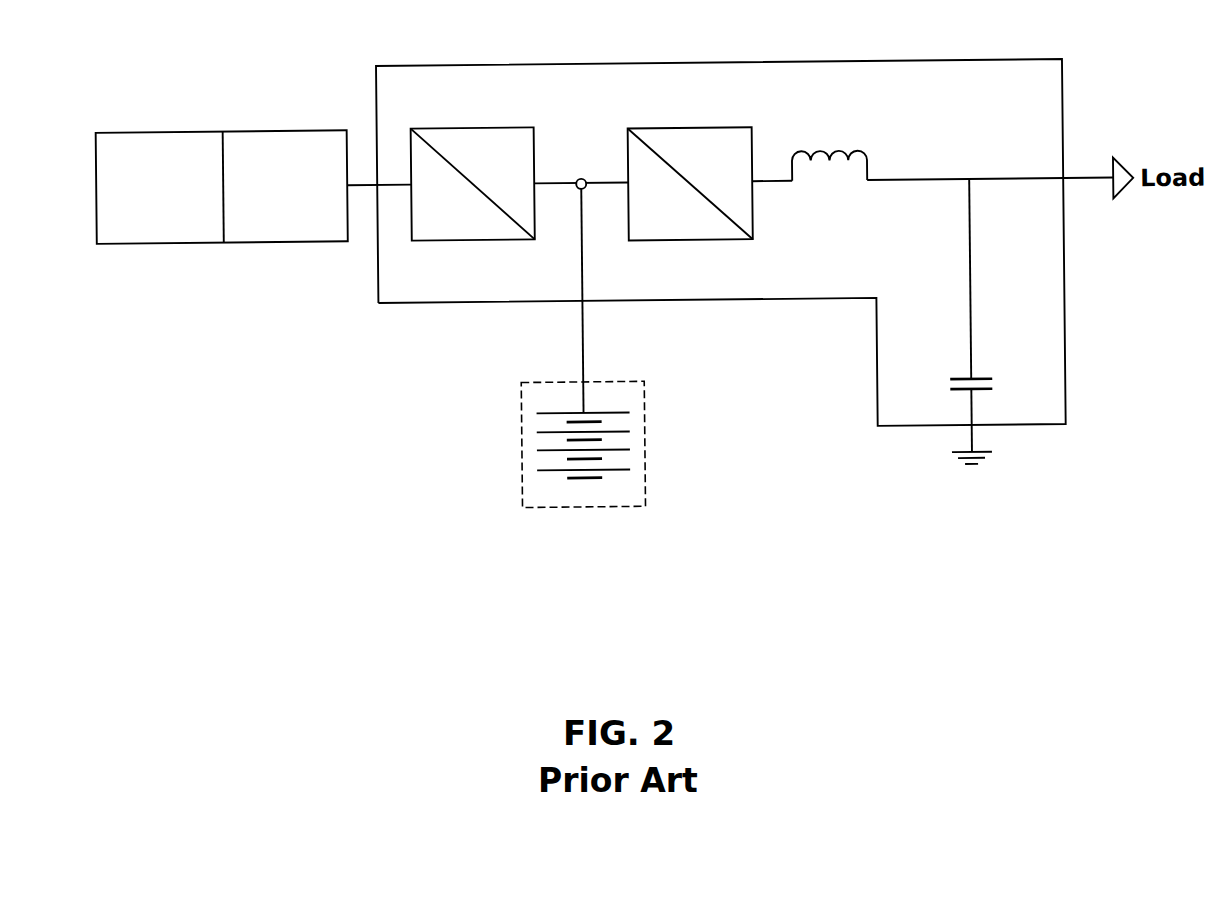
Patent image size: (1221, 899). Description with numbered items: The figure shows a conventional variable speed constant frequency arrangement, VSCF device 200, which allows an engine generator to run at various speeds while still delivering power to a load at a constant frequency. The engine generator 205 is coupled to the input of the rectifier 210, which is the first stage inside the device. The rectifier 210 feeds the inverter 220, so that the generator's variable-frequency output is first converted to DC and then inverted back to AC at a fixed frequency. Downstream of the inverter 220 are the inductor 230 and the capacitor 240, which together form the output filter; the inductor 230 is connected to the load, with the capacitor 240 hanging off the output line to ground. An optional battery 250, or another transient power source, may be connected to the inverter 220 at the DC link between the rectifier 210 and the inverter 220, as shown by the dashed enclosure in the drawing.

The VSCF device 200 is at (637, 68).
The engine generator 205 is at (155, 130).
The rectifier 210 is at (470, 130).
The inverter 220 is at (686, 132).
The inductor 230 is at (832, 156).
The capacitor 240 is at (990, 386).
The battery 250 is at (641, 443).